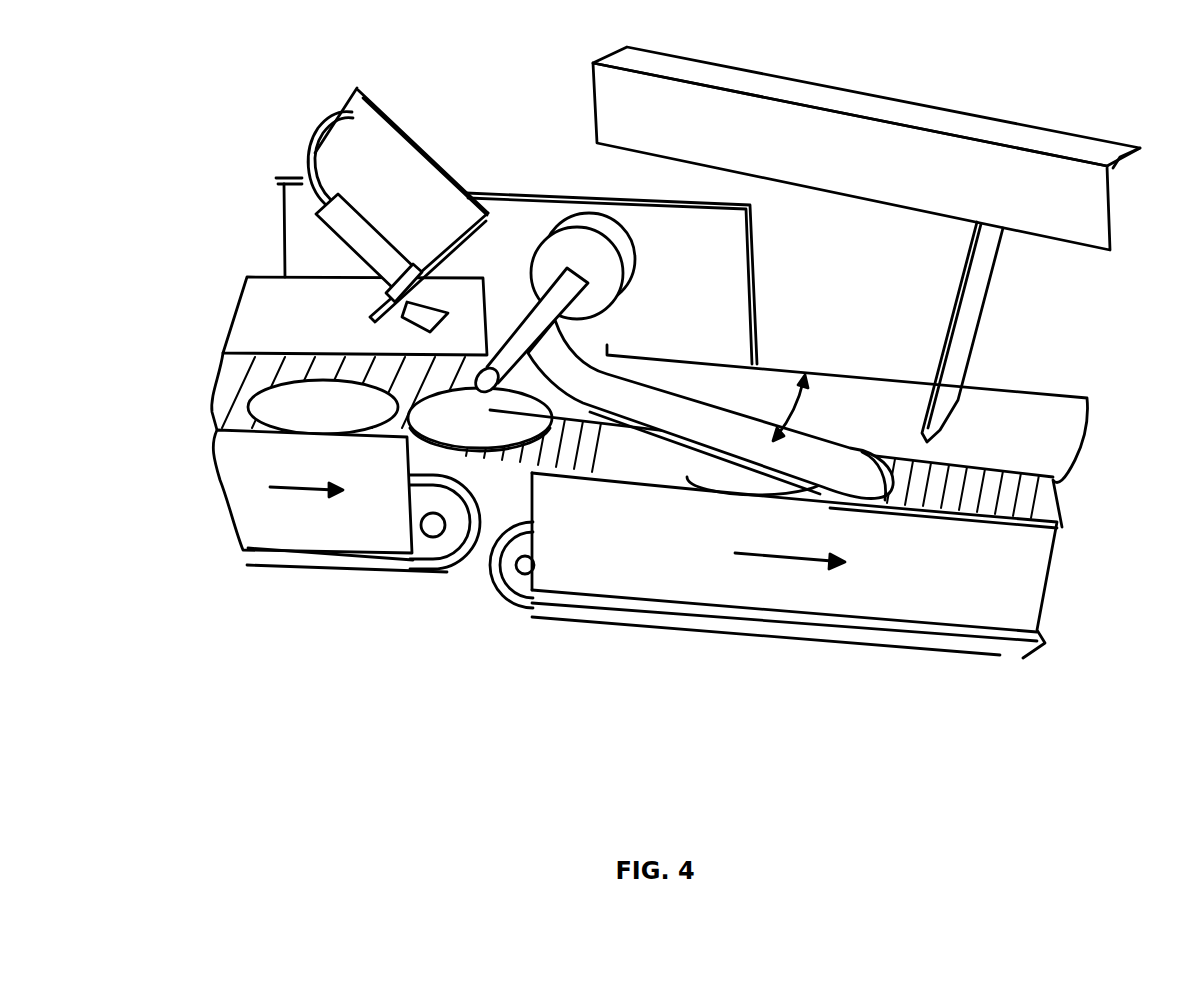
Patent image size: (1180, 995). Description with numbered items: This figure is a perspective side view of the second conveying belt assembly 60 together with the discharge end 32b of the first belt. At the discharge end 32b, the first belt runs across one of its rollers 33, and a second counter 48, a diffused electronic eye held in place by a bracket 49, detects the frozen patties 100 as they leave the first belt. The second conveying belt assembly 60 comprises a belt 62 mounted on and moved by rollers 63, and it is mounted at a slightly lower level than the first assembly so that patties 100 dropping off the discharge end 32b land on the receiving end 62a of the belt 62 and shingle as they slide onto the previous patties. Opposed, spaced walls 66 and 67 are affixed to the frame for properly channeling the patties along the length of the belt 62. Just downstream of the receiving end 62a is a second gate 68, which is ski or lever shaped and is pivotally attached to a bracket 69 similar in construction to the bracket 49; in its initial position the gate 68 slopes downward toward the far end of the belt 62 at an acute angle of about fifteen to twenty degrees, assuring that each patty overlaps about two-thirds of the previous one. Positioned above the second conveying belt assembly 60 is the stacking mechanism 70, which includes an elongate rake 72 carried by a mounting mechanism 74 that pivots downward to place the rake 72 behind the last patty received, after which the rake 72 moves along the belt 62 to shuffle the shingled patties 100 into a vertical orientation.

The discharge end 32b is at (488, 575).
The rollers 33 is at (442, 533).
The second counter 48 is at (372, 247).
The bracket 49 is at (372, 137).
The second conveying belt assembly 60 is at (850, 560).
The belt 62 is at (1037, 487).
The receiving end 62a is at (510, 590).
The rollers 63 is at (533, 617).
The wall 66 is at (913, 607).
The wall 67 is at (1007, 408).
The second gate 68 is at (700, 417).
The bracket 69 is at (608, 225).
The stacking mechanism 70 is at (866, 231).
The rake 72 is at (977, 280).
The mounting mechanism 74 is at (1037, 170).
The frozen patties 100 is at (263, 413).